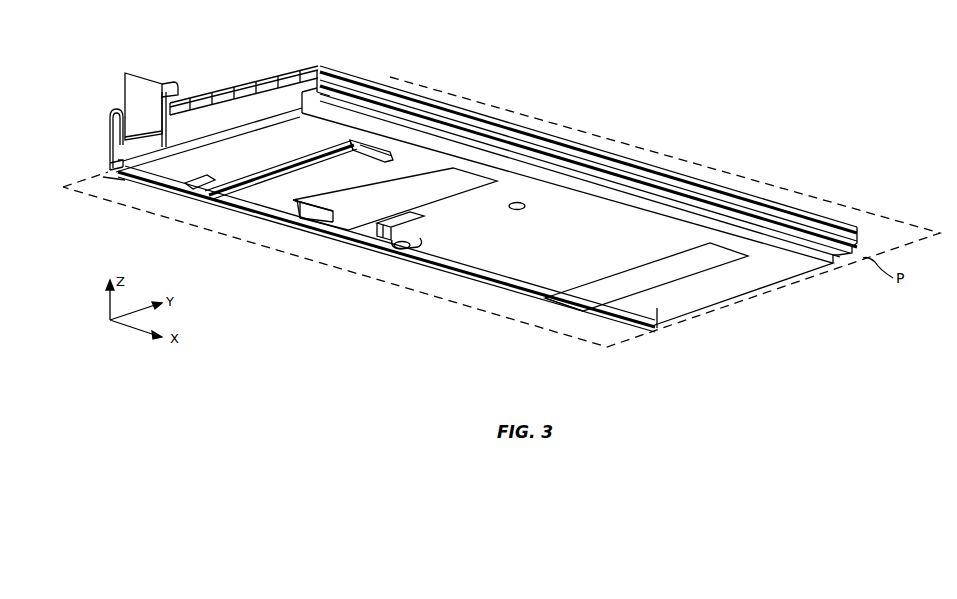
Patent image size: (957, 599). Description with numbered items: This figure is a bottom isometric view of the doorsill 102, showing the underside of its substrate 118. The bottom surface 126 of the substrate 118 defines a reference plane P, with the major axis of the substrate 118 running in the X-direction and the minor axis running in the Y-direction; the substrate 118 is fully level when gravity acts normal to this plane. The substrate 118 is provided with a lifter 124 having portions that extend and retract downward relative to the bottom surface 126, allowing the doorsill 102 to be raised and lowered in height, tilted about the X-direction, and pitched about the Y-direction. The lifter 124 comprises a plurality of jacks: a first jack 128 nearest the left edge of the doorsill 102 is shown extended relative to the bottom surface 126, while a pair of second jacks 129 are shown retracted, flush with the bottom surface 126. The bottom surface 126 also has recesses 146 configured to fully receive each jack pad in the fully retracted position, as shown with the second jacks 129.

The doorsill 102 is at (468, 218).
The substrate 118 is at (220, 152).
The lifter 124 is at (212, 205).
The bottom surface 126 is at (775, 275).
The first jack 128 is at (247, 198).
The second jacks 129 is at (345, 215).
The recesses 146 is at (398, 156).